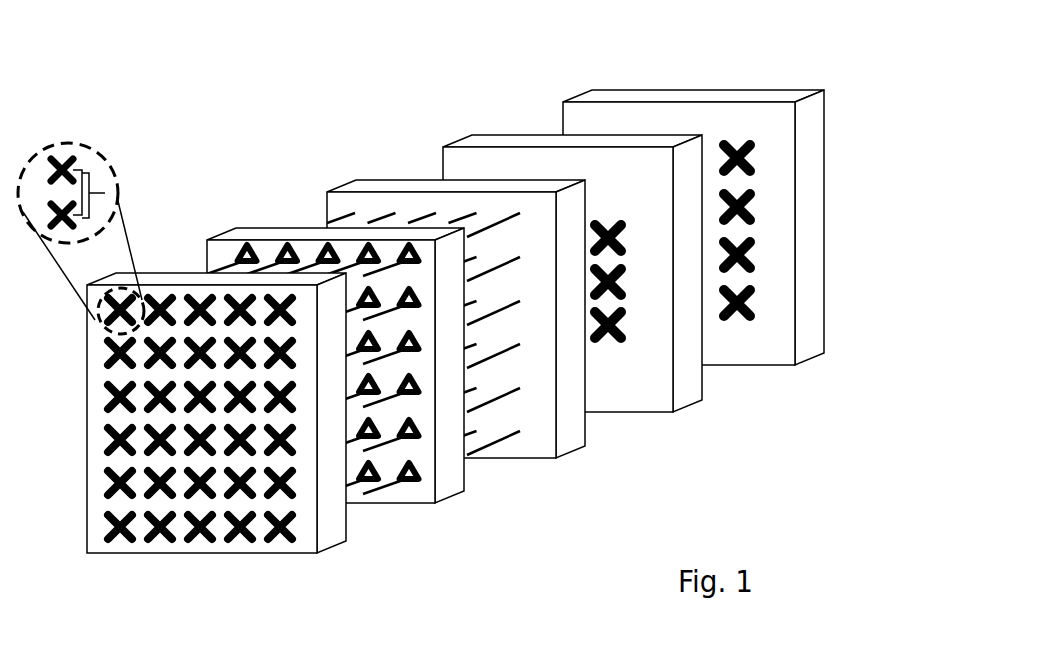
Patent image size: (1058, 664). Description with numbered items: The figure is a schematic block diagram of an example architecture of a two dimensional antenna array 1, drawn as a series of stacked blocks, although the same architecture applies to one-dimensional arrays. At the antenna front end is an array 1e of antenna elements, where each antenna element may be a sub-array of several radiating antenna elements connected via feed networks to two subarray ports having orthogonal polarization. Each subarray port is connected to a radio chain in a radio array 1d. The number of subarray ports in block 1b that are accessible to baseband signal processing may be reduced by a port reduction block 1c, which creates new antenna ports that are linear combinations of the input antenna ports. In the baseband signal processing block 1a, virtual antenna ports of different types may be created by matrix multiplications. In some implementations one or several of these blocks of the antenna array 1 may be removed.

The two dimensional antenna array 1 is at (128, 48).
The baseband signal processing block 1a is at (687, 97).
The block of subarray ports accessible to baseband 1b is at (493, 147).
The port reduction block 1c is at (388, 188).
The radio array 1d is at (293, 237).
The array of antenna elements 1e is at (200, 286).